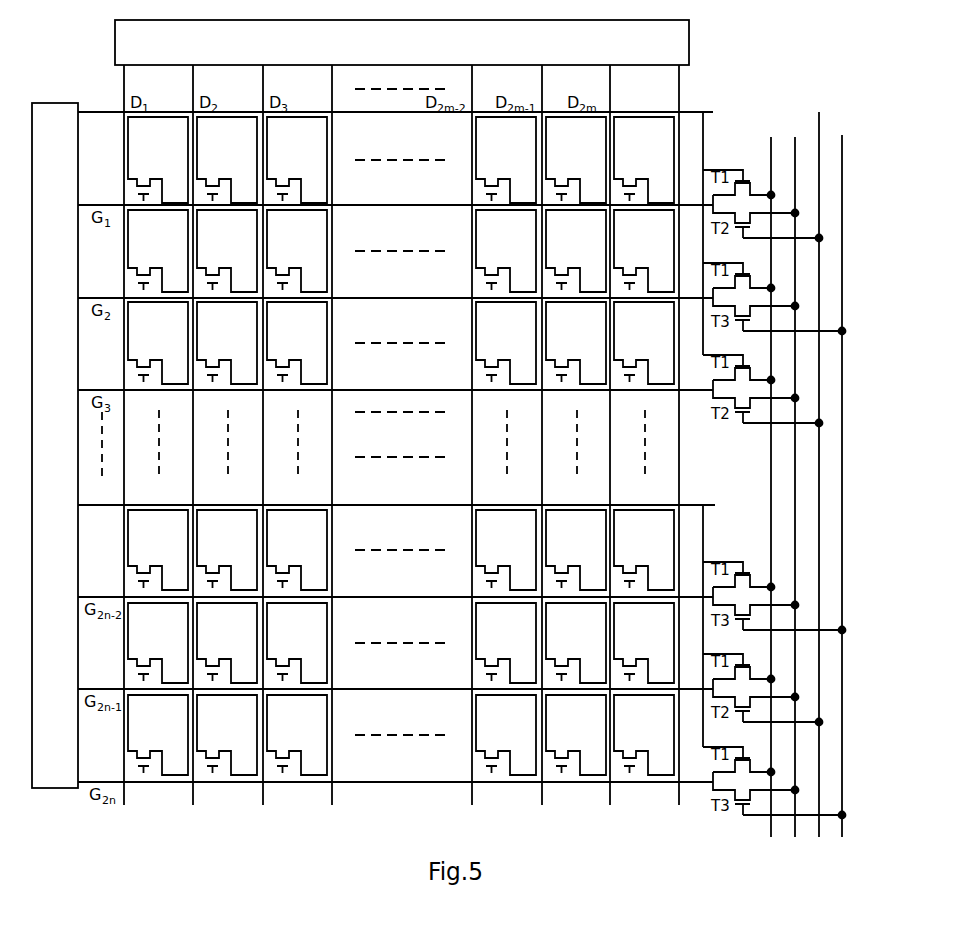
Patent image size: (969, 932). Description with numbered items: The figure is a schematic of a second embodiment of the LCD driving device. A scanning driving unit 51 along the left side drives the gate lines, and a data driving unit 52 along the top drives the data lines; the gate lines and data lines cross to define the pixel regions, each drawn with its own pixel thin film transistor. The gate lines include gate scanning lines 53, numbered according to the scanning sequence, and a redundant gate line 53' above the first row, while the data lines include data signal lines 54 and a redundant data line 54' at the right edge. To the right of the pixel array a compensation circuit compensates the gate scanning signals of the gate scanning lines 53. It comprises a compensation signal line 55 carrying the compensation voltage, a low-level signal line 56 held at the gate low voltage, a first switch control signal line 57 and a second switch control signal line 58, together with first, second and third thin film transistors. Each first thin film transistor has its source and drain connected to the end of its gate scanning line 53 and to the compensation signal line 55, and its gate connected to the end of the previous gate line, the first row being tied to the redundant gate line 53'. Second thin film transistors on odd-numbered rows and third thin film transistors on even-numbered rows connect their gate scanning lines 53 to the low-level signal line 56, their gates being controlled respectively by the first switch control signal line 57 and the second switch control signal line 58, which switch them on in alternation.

The scanning driving unit 51 is at (55, 103).
The data driving chip 52 is at (689, 33).
The gate scanning lines 53 is at (396, 473).
The redundant gate line 53' is at (395, 92).
The data signal lines 54 is at (384, 435).
The redundant data line 54' is at (697, 435).
The compensation signal line 55 is at (771, 181).
The low-level signal line 56 is at (796, 181).
The first switch control signal line 57 is at (819, 199).
The second switch control signal line 58 is at (843, 222).